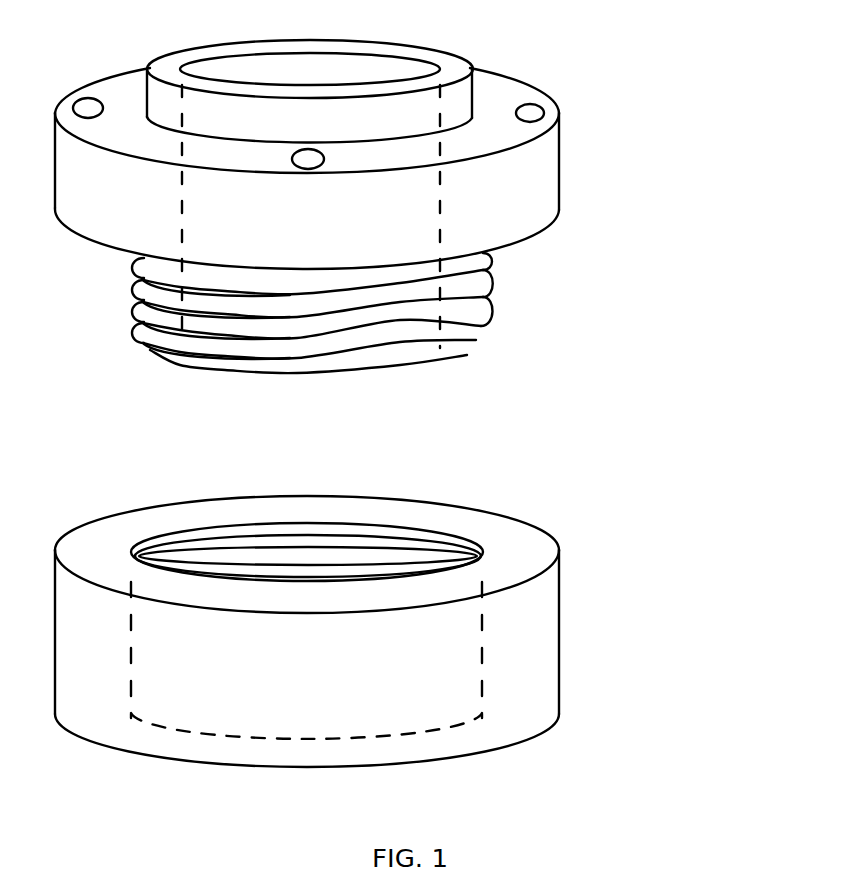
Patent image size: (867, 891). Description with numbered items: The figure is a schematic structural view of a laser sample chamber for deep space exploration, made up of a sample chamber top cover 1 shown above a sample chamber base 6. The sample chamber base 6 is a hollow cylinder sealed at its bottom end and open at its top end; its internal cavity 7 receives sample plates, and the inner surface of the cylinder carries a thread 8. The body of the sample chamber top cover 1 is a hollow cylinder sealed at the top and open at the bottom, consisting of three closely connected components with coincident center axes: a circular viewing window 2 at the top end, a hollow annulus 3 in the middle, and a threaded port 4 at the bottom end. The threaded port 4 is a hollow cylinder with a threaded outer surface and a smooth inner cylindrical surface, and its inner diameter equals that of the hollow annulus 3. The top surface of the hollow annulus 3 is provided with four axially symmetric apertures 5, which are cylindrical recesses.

The sample chamber top cover 1 is at (415, 206).
The circular viewing window 2 is at (387, 68).
The hollow annulus 3 is at (497, 180).
The threaded port 4 is at (443, 295).
The apertures 5 is at (544, 113).
The sample chamber base 6 is at (563, 612).
The internal cavity 7 is at (347, 718).
The thread 8 is at (417, 547).